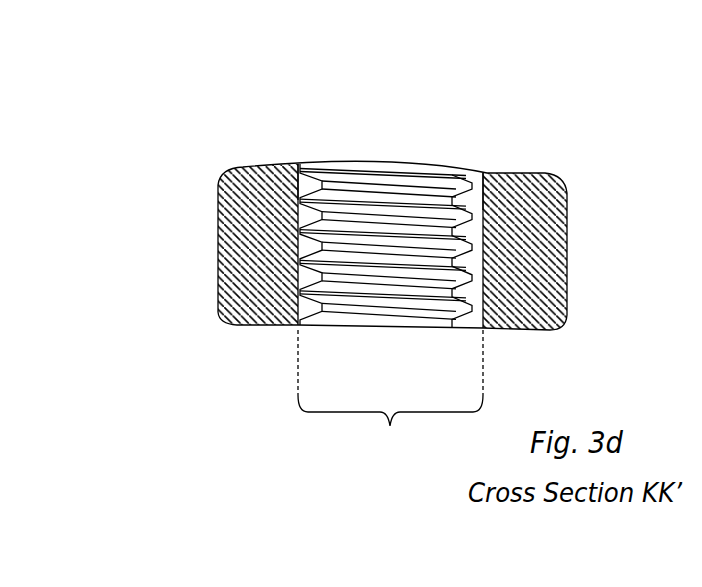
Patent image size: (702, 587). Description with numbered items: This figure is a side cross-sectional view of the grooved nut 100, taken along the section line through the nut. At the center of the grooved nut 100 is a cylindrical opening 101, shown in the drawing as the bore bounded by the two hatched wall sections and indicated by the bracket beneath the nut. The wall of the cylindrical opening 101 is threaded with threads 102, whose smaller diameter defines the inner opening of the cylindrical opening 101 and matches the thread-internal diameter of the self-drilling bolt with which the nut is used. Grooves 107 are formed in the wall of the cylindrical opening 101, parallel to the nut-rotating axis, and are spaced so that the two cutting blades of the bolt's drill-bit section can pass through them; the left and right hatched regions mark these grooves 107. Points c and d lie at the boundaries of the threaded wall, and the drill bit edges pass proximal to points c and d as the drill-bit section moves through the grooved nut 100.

The grooved nut 100 is at (186, 183).
The cylindrical opening 101 is at (390, 397).
The threads 102 is at (414, 193).
The grooves 107 is at (308, 312).
The point d is at (299, 174).
The point c is at (487, 172).